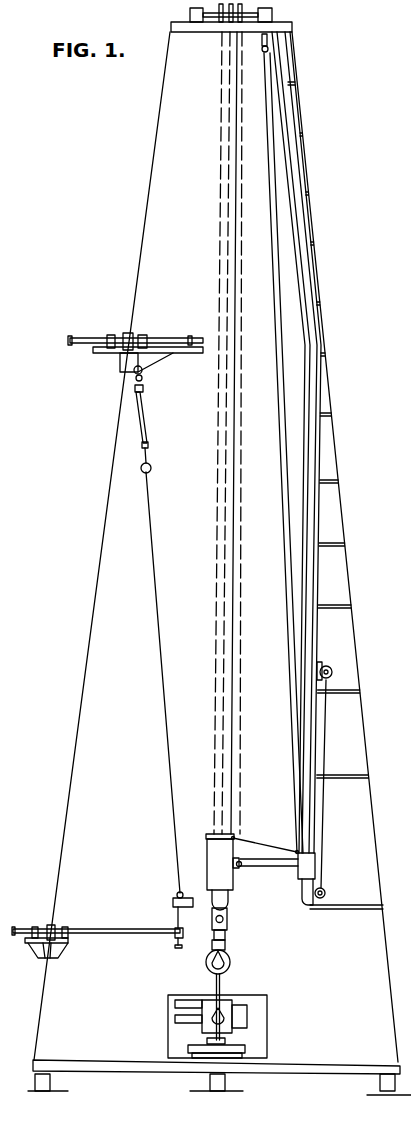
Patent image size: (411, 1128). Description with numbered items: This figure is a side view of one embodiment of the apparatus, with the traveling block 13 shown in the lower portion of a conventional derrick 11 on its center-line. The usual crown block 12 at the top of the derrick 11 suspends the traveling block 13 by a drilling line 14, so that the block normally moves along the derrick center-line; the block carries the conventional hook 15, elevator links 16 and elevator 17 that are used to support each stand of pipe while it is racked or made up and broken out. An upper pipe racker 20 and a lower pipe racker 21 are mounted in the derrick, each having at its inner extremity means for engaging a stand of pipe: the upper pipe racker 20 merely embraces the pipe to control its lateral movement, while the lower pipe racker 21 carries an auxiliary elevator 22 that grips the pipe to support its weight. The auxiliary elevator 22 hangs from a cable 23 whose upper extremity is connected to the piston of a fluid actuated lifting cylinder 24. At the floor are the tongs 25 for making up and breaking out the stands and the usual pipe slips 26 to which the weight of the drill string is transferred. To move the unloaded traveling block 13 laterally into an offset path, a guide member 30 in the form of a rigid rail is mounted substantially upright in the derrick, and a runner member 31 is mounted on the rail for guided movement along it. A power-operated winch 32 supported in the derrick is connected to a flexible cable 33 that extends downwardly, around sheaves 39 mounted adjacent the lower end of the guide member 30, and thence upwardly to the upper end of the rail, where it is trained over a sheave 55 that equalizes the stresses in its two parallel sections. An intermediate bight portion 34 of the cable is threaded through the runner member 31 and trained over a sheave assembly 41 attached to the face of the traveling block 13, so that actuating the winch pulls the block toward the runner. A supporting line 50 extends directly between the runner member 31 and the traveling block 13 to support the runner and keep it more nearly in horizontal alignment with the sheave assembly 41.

The derrick 11 is at (99, 573).
The crown block 12 is at (218, 20).
The traveling block 13 is at (213, 855).
The drilling line 14 is at (220, 198).
The hook 15 is at (206, 965).
The elevator links 16 is at (222, 983).
The elevator 17 is at (227, 1020).
The upper pipe racker 20 is at (167, 338).
The lower pipe racker 21 is at (118, 930).
The auxiliary elevator 22 is at (175, 903).
The cable 23 is at (163, 677).
The fluid actuated lifting cylinder 24 is at (146, 420).
The tongs 25 is at (185, 1005).
The pipe slips 26 is at (212, 1042).
The guide member 30 is at (296, 177).
The runner member 31 is at (308, 862).
The power-operated winch 32 is at (333, 663).
The flexible cable 33 is at (270, 78).
The bight portion 34 is at (280, 868).
The sheaves 39 is at (325, 893).
The sheave assembly 41 is at (243, 867).
The supporting line 50 is at (272, 842).
The sheave 55 is at (262, 50).